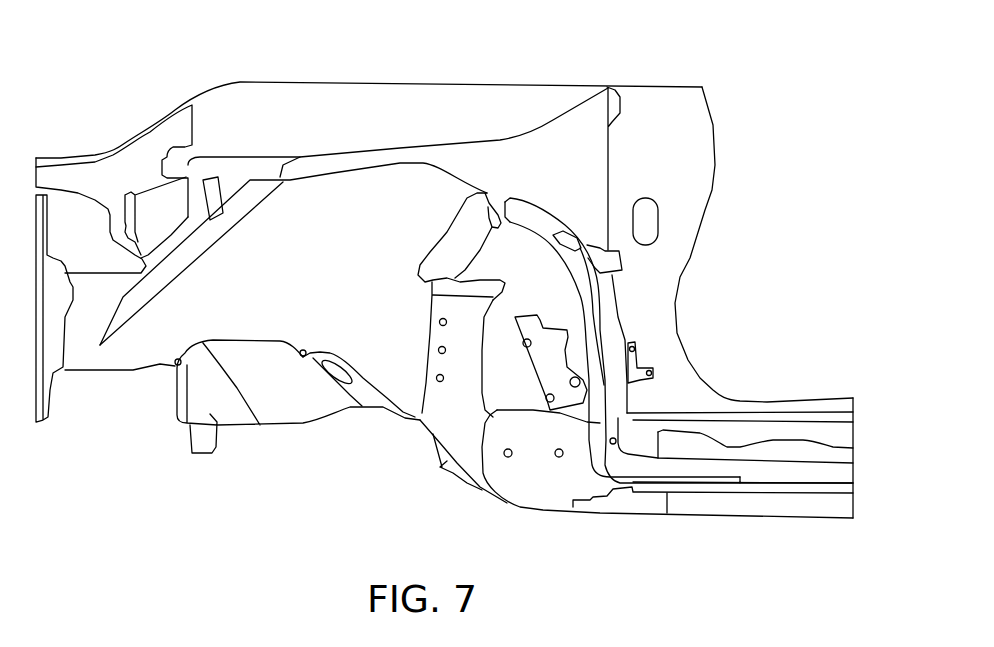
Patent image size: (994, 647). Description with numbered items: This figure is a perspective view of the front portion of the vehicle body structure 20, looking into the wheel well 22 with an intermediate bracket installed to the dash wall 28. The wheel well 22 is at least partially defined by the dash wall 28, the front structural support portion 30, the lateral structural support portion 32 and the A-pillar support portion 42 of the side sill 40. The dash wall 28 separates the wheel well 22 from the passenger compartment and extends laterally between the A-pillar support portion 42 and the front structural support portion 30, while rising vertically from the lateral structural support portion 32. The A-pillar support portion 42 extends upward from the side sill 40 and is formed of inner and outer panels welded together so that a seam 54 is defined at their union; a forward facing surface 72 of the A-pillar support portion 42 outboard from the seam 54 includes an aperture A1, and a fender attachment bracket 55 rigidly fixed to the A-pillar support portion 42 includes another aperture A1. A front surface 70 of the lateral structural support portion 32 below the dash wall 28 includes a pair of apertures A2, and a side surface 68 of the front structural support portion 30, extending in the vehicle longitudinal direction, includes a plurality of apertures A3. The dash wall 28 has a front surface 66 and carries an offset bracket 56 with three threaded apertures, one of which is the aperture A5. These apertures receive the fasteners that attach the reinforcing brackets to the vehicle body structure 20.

The vehicle body structure 20 is at (584, 51).
The wheel well 22 is at (368, 387).
The dash wall 28 is at (543, 267).
The front structural support portion 30 is at (446, 401).
The lateral structural support portion 32 is at (517, 490).
The side sill 40 is at (795, 405).
The A-pillar support portion 42 is at (673, 375).
The seam 54 is at (597, 443).
The fender attachment bracket 55 is at (640, 367).
The offset bracket 56 is at (540, 357).
The front surface of the dash wall 66 is at (520, 248).
The side surface of the front structural support portion 68 is at (463, 322).
The front surface of the lateral structural support portion 70 is at (500, 468).
The forward facing surface 72 is at (613, 395).
The aperture A1 is at (613, 444).
The apertures A2 is at (557, 457).
The apertures A3 is at (439, 377).
The aperture A5 is at (528, 340).